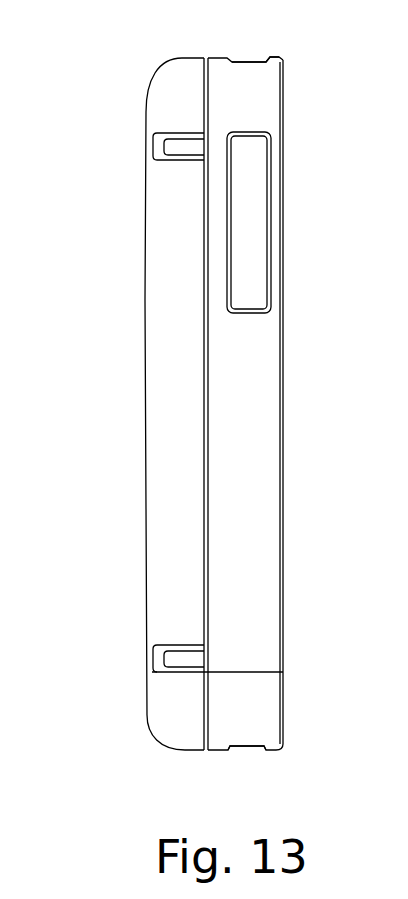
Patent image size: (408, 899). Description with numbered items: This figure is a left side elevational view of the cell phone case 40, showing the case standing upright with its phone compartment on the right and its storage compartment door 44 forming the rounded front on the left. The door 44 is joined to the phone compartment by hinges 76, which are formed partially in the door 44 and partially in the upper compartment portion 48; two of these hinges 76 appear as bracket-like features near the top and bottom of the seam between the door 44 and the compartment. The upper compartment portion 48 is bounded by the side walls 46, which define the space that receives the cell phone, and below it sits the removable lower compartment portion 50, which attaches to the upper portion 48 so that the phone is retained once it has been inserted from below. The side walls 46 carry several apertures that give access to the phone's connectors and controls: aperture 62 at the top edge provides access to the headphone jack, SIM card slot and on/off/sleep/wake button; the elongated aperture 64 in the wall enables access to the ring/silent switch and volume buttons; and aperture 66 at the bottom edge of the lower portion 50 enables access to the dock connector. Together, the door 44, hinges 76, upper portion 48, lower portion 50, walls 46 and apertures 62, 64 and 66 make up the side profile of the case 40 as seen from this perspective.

The cell phone case 40 is at (192, 396).
The storage compartment door 44 is at (143, 500).
The side walls 46 is at (243, 403).
The upper compartment portion 48 is at (283, 528).
The removable compartment portion 50 is at (284, 717).
The aperture 62 is at (256, 58).
The aperture 64 is at (247, 313).
The aperture 66 is at (244, 750).
The hinges 76 is at (163, 168).